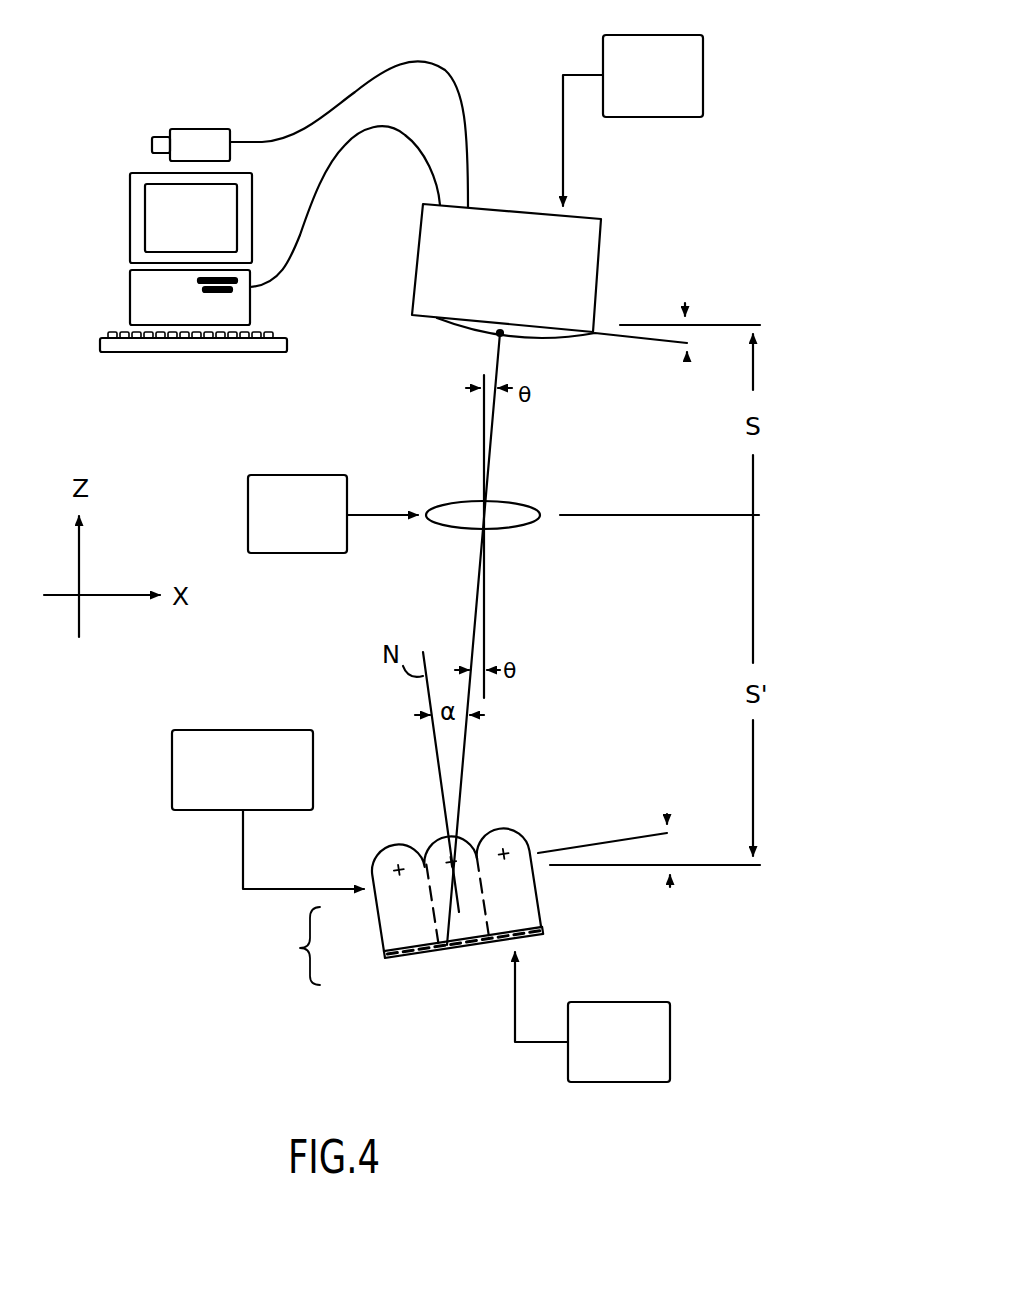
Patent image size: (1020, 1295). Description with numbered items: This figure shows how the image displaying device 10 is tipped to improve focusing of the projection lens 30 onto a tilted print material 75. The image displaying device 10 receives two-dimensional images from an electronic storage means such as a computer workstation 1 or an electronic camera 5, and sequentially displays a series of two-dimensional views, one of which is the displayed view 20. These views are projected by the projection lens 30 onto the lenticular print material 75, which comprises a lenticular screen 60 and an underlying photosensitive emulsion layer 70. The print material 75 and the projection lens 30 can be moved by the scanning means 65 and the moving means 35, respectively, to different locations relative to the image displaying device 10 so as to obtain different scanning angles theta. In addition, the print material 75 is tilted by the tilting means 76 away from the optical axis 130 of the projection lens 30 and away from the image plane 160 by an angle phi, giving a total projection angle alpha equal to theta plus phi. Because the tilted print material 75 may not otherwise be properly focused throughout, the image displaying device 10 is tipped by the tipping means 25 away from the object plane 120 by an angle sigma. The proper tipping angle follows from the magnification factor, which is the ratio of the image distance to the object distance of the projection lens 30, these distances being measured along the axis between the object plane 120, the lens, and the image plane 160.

The computer workstation 1 is at (118, 232).
The electronic camera 5 is at (182, 137).
The image displaying device 10 is at (428, 232).
The displayed 2D view 20 is at (453, 322).
The tipping means 25 is at (703, 90).
The projection lens 30 is at (512, 524).
The moving means 35 is at (281, 547).
The lenticular screen 60 is at (372, 913).
The scanning means 65 is at (198, 800).
The photosensitive emulsion layer 70 is at (384, 956).
The print material 75 is at (296, 946).
The tilting means 76 is at (670, 1057).
The object plane 120 is at (718, 325).
The optical axis 130 is at (482, 640).
The image plane 160 is at (608, 867).